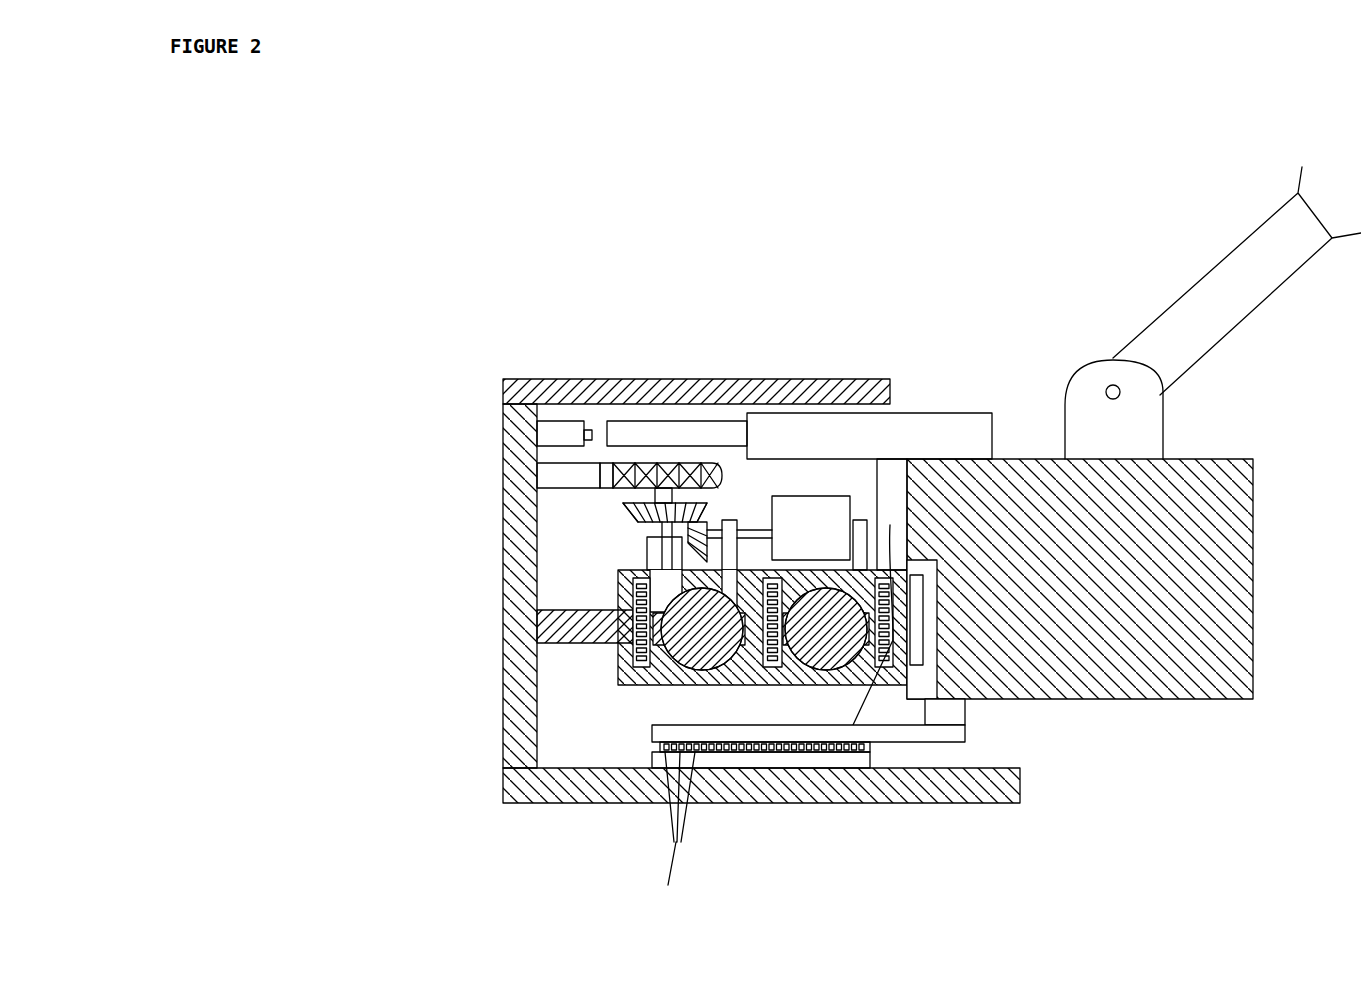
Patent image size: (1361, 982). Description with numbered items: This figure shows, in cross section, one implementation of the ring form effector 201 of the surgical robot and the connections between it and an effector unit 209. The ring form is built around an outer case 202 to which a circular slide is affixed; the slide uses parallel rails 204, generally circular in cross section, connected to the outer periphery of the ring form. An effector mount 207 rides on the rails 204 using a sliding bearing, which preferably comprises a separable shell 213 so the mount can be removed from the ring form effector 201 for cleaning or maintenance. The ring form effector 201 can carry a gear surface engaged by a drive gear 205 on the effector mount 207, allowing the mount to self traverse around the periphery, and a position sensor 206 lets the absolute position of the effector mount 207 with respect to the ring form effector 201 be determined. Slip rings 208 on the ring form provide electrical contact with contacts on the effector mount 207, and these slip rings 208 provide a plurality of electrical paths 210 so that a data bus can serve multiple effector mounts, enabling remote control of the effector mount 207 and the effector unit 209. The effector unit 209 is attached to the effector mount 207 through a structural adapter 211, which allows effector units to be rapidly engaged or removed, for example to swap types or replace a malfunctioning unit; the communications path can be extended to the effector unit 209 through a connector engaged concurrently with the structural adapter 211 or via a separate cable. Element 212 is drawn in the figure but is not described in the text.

The ring form effector 201 is at (708, 591).
The outer case 202 is at (537, 620).
The rails 204 is at (700, 658).
The drive gear 205 is at (823, 510).
The position sensor 206 is at (718, 430).
The effector mount 207 is at (925, 692).
The slip rings 208 is at (870, 730).
The effector unit 209 is at (1238, 517).
The electrical paths 210 is at (657, 745).
The structural adapter 211 is at (915, 578).
The circuit board 212 is at (857, 705).
The separable shell 213 is at (590, 423).